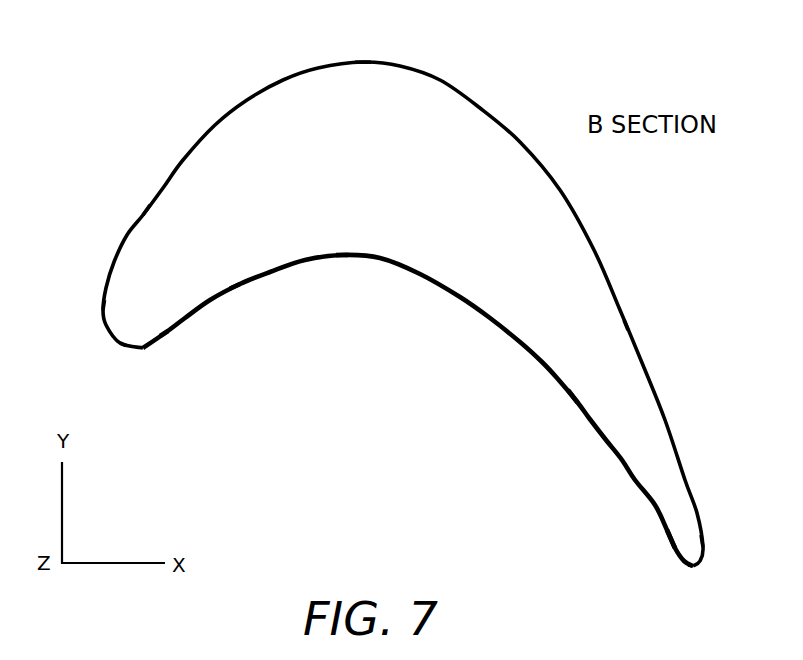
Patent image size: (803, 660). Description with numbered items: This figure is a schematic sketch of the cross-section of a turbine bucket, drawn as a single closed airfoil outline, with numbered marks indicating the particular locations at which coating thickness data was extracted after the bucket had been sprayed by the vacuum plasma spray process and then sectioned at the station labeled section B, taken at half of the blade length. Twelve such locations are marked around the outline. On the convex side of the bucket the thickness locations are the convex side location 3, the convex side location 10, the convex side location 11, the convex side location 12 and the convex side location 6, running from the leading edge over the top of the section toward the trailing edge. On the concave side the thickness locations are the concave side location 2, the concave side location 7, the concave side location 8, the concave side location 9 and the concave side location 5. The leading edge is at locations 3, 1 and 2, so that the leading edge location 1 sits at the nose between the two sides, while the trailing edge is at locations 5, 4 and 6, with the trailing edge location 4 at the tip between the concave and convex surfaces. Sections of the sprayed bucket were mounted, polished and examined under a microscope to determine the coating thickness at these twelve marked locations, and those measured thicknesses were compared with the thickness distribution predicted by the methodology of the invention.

The leading edge location 1 is at (122, 358).
The leading edge location on concave side 2 is at (165, 355).
The leading edge location on convex side 3 is at (93, 312).
The trailing edge location 4 is at (695, 582).
The trailing edge location on concave side 5 is at (661, 551).
The trailing edge location on convex side 6 is at (711, 532).
The concave side location 7 is at (230, 306).
The concave side location 8 is at (340, 273).
The concave side location 9 is at (565, 408).
The convex side location 10 is at (132, 199).
The convex side location 11 is at (370, 44).
The convex side location 12 is at (644, 334).